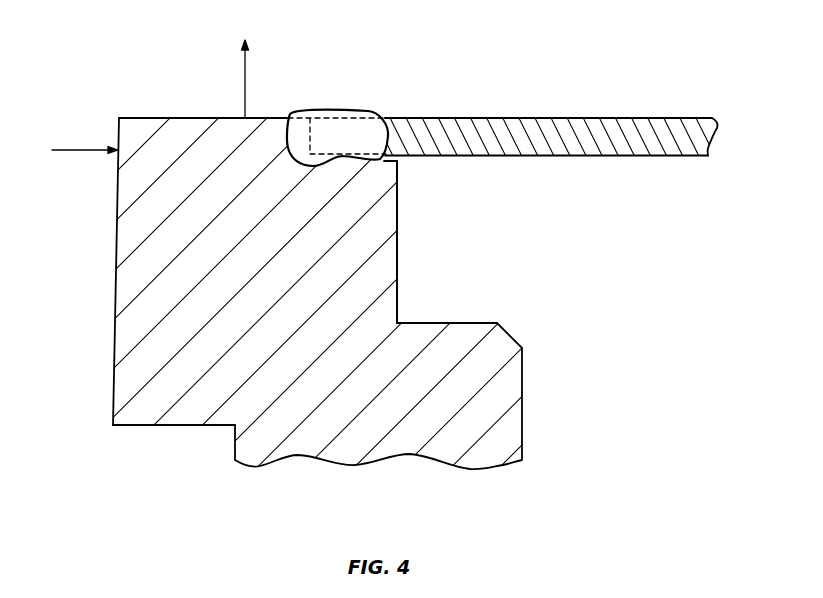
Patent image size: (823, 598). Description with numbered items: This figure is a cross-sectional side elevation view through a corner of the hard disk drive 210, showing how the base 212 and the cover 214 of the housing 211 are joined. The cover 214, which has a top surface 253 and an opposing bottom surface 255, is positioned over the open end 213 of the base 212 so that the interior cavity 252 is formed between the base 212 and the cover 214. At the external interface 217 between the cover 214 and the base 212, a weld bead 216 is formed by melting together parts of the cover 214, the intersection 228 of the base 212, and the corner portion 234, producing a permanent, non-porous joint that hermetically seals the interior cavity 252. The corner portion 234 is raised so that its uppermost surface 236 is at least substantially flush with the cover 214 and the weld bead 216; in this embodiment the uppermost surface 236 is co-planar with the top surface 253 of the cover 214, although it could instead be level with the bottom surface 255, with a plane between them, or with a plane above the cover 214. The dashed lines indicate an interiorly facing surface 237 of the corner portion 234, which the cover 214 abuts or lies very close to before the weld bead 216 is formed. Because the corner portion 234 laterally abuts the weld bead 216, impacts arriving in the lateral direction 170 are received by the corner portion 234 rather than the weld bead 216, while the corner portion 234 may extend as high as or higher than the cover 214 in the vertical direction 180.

The hard disk drive 210 is at (411, 258).
The base 212 is at (319, 445).
The cover 214 is at (509, 122).
The housing 211 is at (617, 106).
The top surface 253 is at (670, 118).
The bottom surface 255 is at (600, 157).
The weld bead 216 is at (342, 136).
The interiorly facing surface 237 is at (313, 138).
The external interface 217 is at (396, 134).
The open end 213 is at (397, 161).
The intersection 228 is at (375, 233).
The uppermost surface 236 is at (193, 118).
The corner portion 234 is at (140, 418).
The interior cavity 252 is at (559, 309).
The direction 170 is at (90, 150).
The direction 180 is at (243, 78).